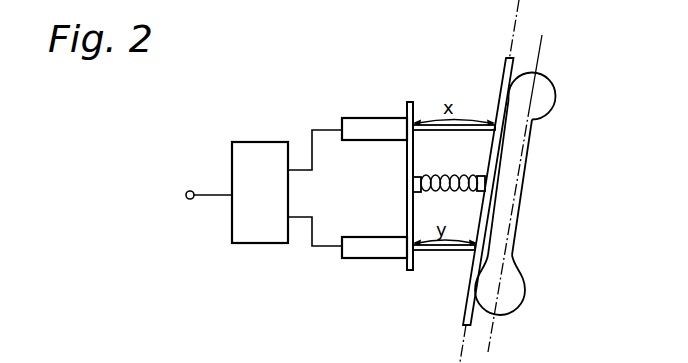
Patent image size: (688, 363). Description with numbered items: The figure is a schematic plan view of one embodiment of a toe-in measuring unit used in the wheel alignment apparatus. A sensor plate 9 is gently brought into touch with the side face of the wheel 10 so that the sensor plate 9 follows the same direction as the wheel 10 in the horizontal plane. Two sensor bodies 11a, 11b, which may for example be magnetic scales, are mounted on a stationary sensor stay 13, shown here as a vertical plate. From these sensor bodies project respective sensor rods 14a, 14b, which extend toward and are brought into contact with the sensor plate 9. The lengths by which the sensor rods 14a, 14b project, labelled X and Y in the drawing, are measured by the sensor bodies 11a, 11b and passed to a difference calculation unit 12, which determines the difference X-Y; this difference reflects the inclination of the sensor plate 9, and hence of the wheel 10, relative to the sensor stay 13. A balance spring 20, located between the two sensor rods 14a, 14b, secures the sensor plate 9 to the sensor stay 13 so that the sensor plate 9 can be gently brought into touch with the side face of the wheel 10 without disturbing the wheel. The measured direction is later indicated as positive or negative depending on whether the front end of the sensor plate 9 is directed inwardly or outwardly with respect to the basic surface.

The sensor plate 9 is at (506, 61).
The wheel 10 is at (555, 96).
The sensor body 11a is at (363, 118).
The sensor body 11b is at (364, 237).
The difference calculation unit 12 is at (258, 142).
The sensor stay 13 is at (409, 102).
The sensor rod 14a is at (430, 132).
The sensor rod 14b is at (437, 252).
The balance spring 20 is at (471, 174).